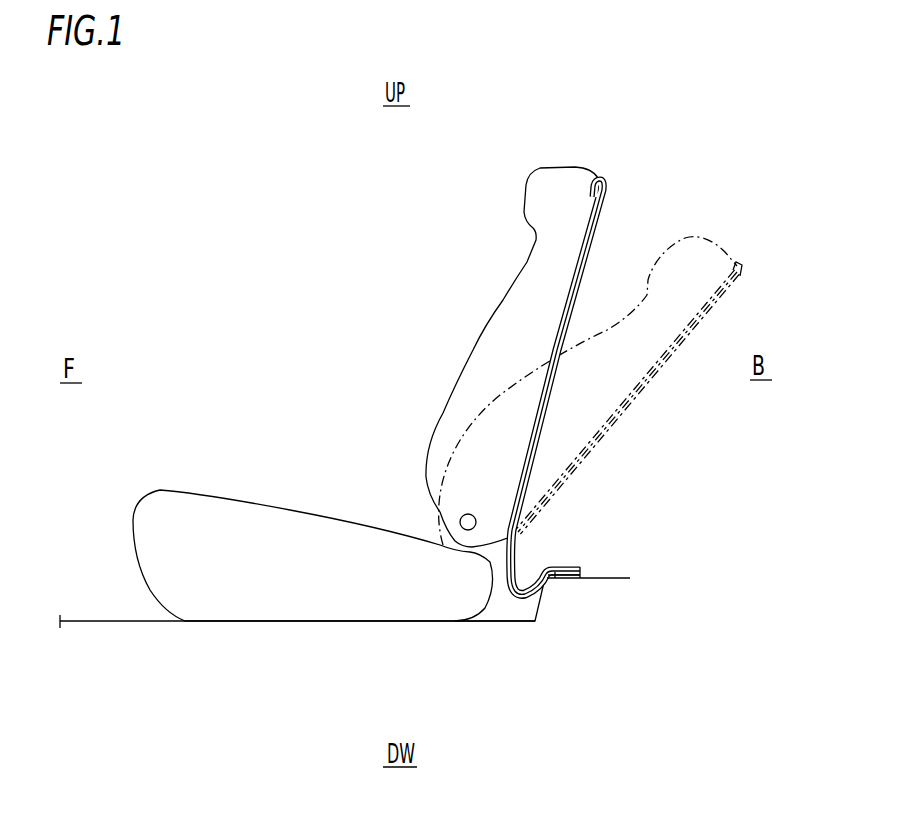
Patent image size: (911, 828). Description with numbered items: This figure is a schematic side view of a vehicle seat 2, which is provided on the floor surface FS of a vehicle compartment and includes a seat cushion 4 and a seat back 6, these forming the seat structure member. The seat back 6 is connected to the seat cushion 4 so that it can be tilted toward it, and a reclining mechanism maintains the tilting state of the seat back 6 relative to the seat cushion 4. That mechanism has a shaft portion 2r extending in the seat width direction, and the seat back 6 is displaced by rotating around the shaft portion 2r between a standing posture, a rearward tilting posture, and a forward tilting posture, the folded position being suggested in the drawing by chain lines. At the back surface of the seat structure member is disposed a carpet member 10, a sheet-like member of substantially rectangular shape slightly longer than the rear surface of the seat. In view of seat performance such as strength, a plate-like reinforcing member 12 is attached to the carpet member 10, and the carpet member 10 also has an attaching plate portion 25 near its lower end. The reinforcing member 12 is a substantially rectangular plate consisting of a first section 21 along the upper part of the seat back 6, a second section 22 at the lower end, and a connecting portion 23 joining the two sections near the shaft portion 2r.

The vehicle seat 2 is at (597, 161).
The seat cushion 4 is at (229, 517).
The seat back 6 is at (520, 270).
The carpet member 10 is at (607, 213).
The reinforcing member 12 is at (618, 418).
The first section 21 is at (600, 237).
The second section 22 is at (515, 562).
The connecting portion 23 is at (518, 541).
The attaching plate portion 25 is at (570, 580).
The shaft portion 2r is at (462, 528).
The floor surface FS is at (107, 621).